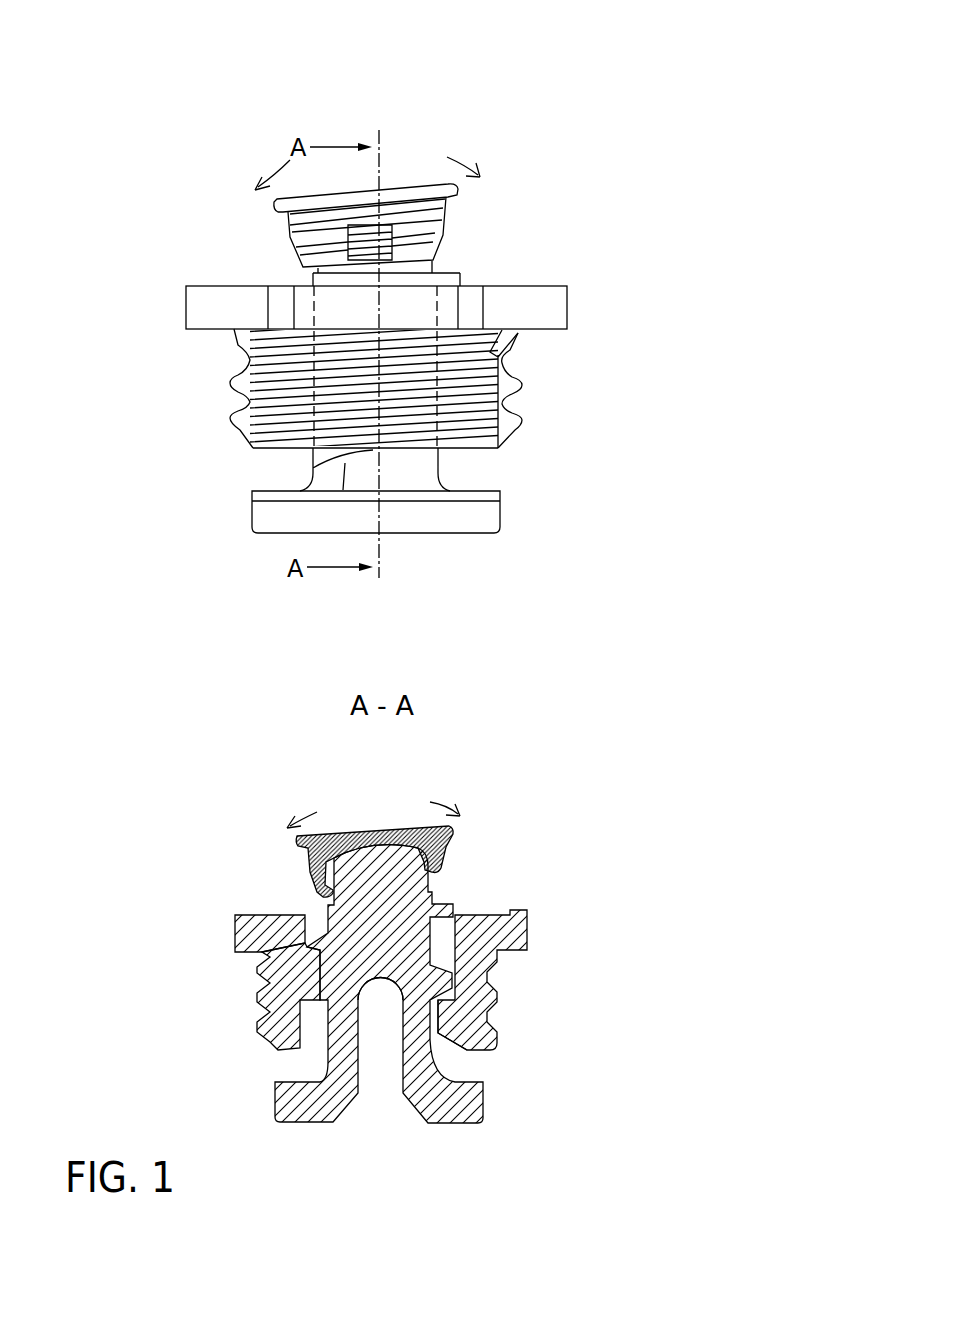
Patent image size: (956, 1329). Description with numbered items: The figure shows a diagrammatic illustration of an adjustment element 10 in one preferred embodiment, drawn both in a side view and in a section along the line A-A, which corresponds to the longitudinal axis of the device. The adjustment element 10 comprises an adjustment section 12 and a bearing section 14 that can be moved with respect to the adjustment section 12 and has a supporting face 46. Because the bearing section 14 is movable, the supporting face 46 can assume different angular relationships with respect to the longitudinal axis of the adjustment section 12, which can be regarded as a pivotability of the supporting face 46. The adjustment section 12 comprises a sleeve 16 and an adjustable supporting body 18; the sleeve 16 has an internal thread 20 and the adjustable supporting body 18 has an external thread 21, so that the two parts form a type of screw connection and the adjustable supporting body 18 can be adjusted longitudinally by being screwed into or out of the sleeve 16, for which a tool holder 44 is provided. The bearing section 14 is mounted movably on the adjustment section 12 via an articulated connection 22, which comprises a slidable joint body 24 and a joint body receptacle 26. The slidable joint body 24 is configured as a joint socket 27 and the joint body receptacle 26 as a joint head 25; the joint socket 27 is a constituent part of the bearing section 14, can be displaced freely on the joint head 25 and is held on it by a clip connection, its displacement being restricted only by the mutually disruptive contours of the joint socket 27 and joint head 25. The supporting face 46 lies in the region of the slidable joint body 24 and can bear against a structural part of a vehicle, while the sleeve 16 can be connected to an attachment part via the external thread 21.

The adjustment element 10 is at (502, 98).
The adjustment section 12 is at (403, 684).
The bearing section 14 is at (507, 179).
The sleeve 16 is at (247, 307).
The adjustable supporting body 18 is at (478, 512).
The internal thread 20 is at (426, 1019).
The external thread 21 is at (224, 400).
The articulated connection 22 is at (414, 246).
The slidable joint body 24 is at (348, 502).
The joint socket 27 is at (309, 207).
The joint head 25 is at (275, 547).
The joint body receptacle 26 is at (363, 231).
The tool holder 44 is at (378, 1096).
The supporting face 46 is at (410, 172).